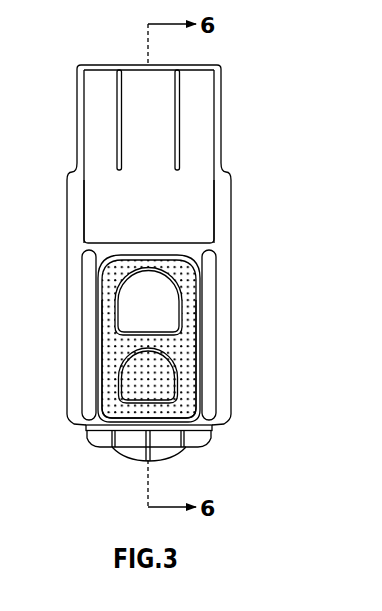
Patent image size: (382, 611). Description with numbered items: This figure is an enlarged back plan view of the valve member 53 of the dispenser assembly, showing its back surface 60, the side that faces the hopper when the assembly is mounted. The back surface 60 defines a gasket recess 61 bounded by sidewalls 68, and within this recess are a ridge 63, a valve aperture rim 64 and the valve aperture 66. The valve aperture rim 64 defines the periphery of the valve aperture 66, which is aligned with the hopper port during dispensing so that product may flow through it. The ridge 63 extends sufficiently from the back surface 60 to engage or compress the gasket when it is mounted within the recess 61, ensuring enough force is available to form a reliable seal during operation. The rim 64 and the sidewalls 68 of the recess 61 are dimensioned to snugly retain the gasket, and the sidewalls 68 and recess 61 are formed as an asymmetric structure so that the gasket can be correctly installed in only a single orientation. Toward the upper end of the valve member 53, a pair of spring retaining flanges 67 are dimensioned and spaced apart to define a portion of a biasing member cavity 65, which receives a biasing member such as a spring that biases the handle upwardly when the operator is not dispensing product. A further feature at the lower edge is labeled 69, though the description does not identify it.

The valve member 53 is at (234, 106).
The back surface 60 is at (169, 193).
The gasket recess 61 is at (197, 412).
The ridge 63 is at (175, 365).
The valve aperture rim 64 is at (120, 303).
The biasing member cavity 65 is at (145, 152).
The valve aperture 66 is at (167, 298).
The spring retaining flanges 67 is at (120, 65).
The sidewalls 68 is at (197, 342).
The side rail 69 is at (81, 425).